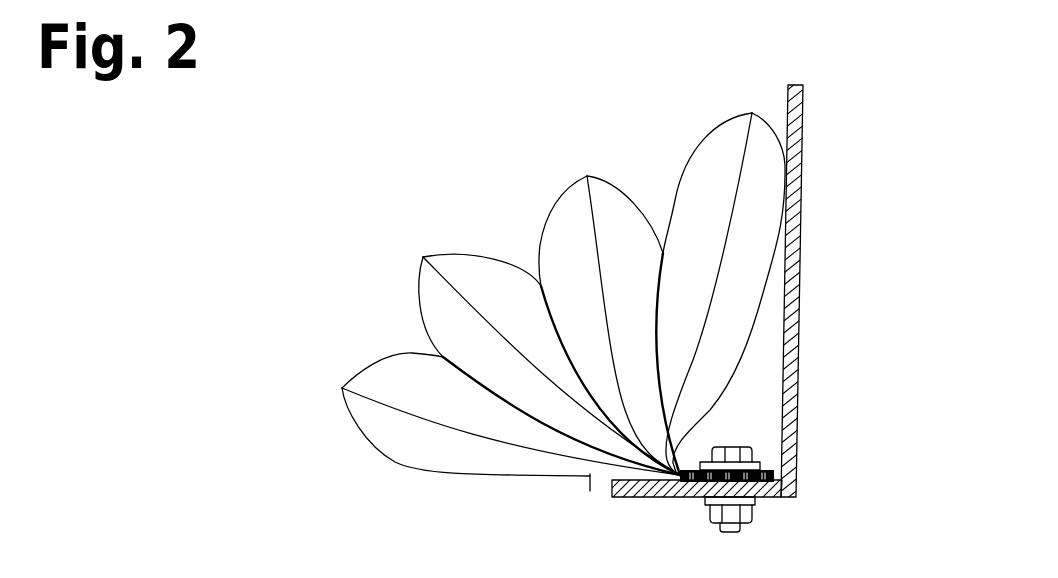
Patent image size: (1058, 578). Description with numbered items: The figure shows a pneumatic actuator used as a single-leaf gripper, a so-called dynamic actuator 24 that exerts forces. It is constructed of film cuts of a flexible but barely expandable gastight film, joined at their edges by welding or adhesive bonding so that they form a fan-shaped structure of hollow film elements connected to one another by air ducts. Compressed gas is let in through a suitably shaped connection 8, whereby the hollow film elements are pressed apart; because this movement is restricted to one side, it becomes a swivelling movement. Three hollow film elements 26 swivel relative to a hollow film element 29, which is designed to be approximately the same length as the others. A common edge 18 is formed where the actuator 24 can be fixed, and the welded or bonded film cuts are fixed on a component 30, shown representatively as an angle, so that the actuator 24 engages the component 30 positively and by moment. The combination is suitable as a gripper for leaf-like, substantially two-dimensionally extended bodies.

The connection 8 is at (599, 486).
The common edge 18 is at (776, 471).
The actuator 24 is at (332, 188).
The hollow film elements 26 is at (388, 433).
The hollow film element 29 is at (763, 192).
The component 30 is at (792, 308).